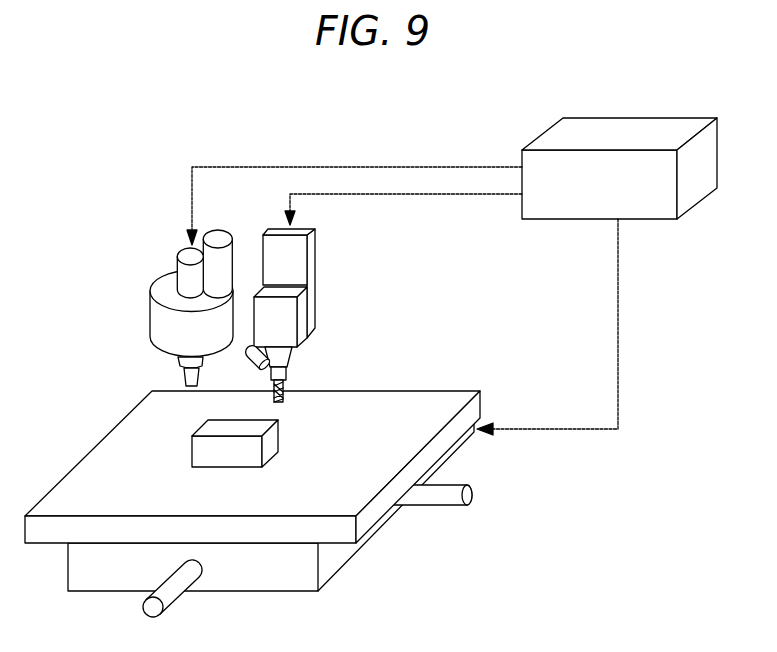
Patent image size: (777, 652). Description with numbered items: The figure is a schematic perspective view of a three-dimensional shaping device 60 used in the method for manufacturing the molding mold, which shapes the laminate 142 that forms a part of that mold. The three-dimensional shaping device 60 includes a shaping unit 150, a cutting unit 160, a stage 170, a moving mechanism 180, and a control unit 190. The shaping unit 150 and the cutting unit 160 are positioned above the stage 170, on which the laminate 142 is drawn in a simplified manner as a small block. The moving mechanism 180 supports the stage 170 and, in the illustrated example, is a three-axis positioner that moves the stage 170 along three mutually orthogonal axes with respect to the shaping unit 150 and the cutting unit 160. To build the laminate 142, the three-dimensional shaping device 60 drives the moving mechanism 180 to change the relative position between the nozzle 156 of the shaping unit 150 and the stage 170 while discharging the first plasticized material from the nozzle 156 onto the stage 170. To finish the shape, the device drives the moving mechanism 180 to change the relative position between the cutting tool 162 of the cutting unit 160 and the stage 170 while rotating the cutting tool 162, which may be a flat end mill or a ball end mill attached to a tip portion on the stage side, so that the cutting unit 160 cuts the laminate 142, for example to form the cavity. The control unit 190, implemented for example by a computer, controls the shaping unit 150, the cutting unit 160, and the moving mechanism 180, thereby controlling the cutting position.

The three-dimensional shaping device 60 is at (130, 177).
The laminate 142 is at (222, 450).
The shaping unit 150 is at (165, 323).
The nozzle 156 is at (182, 380).
The cutting unit 160 is at (282, 322).
The cutting tool 162 is at (288, 391).
The stage 170 is at (365, 517).
The moving mechanism 180 is at (335, 557).
The control unit 190 is at (598, 137).